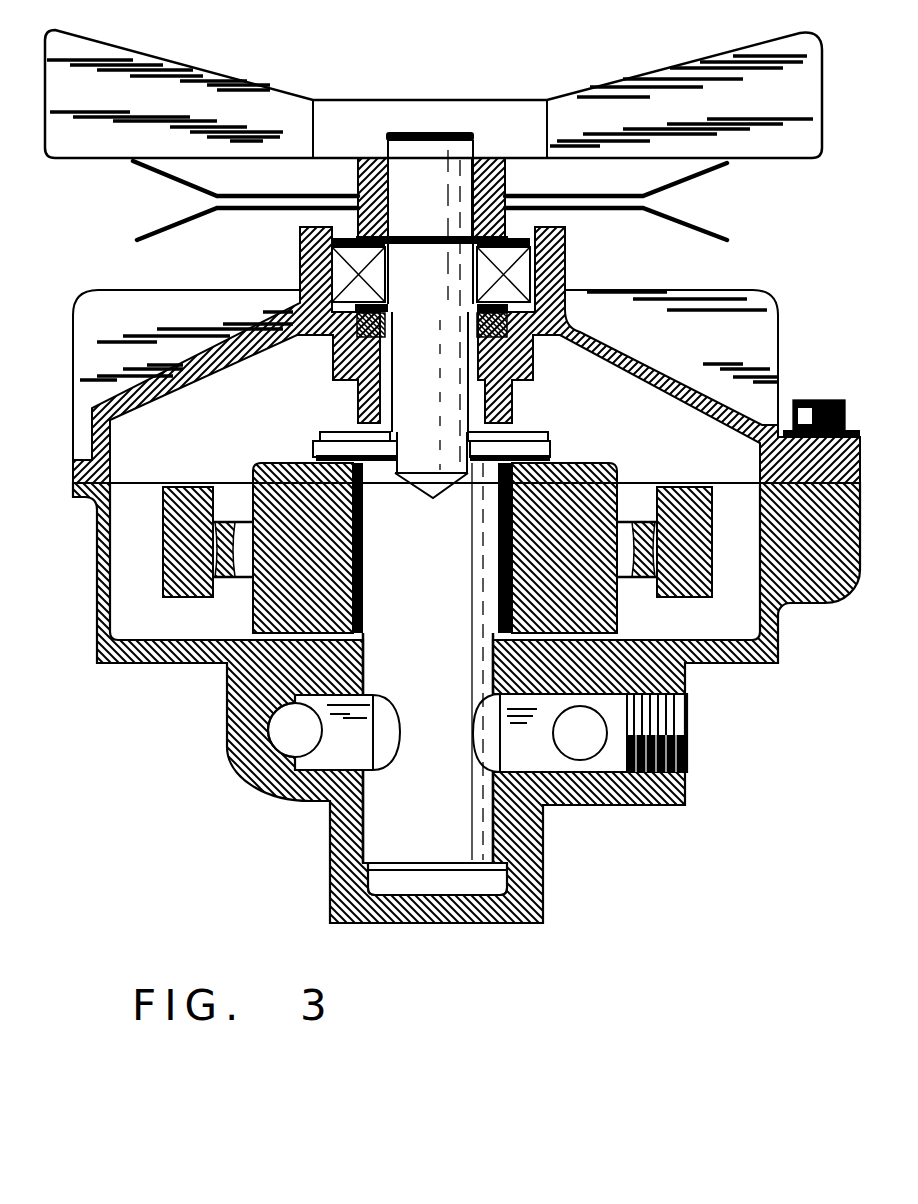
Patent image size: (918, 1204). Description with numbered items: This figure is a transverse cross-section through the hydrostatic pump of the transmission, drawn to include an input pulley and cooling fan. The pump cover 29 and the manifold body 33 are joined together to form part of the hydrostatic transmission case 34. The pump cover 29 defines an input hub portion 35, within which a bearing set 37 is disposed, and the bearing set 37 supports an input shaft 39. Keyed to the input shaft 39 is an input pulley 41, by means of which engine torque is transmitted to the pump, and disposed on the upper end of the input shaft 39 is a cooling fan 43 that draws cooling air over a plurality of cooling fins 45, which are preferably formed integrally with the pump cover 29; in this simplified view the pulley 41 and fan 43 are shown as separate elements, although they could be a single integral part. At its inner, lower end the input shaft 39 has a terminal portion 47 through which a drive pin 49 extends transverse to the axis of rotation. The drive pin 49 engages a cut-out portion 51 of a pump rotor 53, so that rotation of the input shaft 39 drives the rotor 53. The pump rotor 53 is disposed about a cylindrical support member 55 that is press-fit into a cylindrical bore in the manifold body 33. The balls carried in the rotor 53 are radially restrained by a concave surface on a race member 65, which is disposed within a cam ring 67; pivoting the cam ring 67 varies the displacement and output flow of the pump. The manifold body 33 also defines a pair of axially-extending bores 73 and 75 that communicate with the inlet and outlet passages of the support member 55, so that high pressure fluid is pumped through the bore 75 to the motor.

The pump cover 29 is at (687, 367).
The manifold body 33 is at (738, 665).
The hydrostatic transmission case 34 is at (66, 481).
The input hub portion 35 is at (563, 248).
The bearing set 37 is at (338, 273).
The input shaft 39 is at (418, 163).
The input pulley 41 is at (708, 232).
The cooling fan 43 is at (197, 93).
The cooling fins 45 is at (92, 333).
The terminal portion 47 is at (433, 457).
The drive pin 49 is at (553, 453).
The cut-out portion 51 is at (323, 430).
The pump rotor 53 is at (290, 493).
The cylindrical support member 55 is at (463, 647).
The race member 65 is at (627, 520).
The cam ring 67 is at (185, 507).
The axially-extending bore 73 is at (268, 740).
The axially-extending bore 75 is at (582, 742).